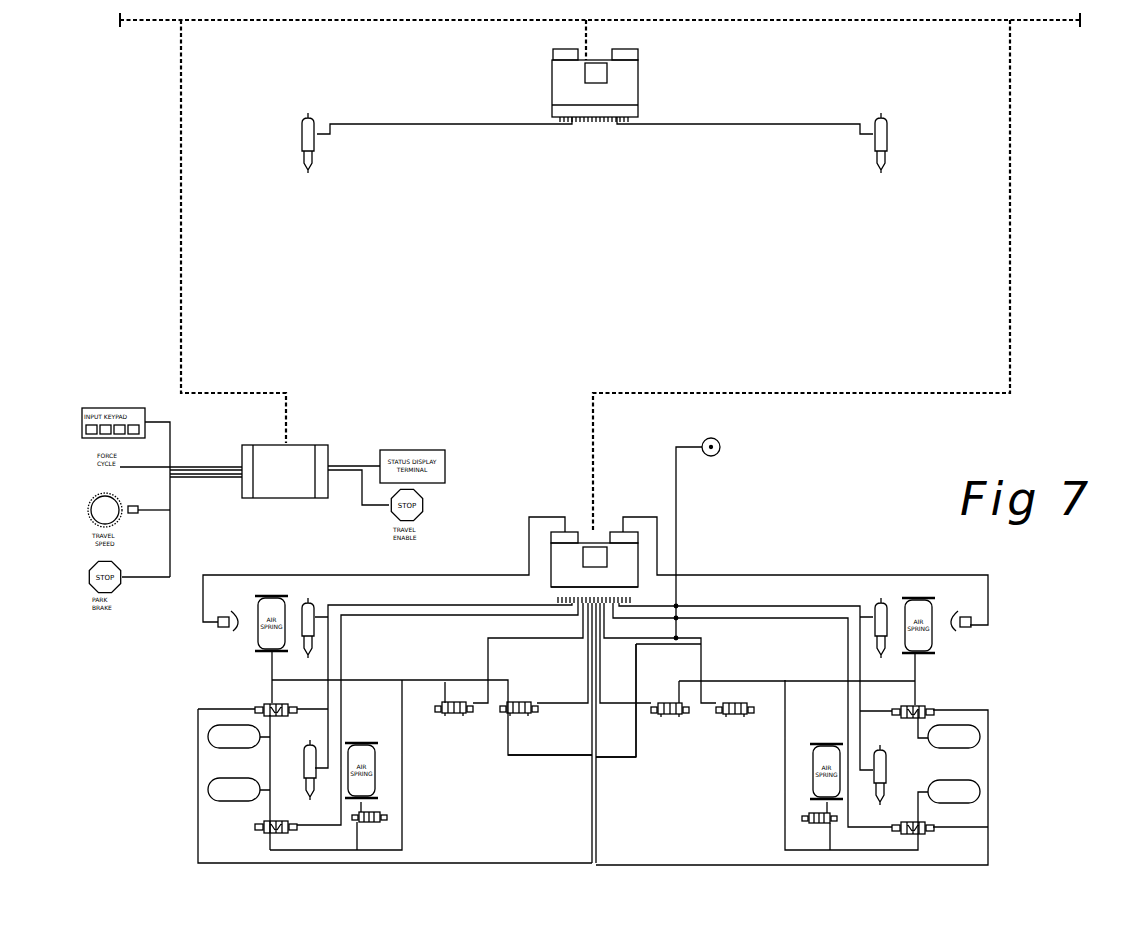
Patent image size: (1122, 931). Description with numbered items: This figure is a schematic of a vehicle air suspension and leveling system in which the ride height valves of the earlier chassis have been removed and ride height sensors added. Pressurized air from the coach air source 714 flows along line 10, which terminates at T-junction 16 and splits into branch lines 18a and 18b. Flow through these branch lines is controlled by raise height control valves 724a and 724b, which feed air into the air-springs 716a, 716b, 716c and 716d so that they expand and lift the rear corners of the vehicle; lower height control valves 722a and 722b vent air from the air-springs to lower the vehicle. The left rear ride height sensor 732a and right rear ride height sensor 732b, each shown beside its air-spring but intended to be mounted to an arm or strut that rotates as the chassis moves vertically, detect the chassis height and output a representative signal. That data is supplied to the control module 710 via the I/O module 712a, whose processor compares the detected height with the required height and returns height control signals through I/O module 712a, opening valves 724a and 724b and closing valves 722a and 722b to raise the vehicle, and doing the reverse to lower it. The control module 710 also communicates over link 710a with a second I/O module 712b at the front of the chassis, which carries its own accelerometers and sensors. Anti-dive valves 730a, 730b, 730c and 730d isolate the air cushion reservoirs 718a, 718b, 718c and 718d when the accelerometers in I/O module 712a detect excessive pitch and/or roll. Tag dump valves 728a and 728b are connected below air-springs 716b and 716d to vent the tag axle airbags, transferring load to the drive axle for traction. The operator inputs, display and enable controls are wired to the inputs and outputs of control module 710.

The line 10 is at (676, 490).
The T-junction 16 is at (638, 758).
The line 18a is at (537, 760).
The line 18b is at (677, 745).
The control module 710 is at (305, 449).
The communication bus 710a is at (288, 404).
The I/O module 712a is at (630, 560).
The I/O module and 2 axis accelerometer 712b is at (630, 80).
The coach air source 714 is at (720, 452).
The air-spring 716a is at (258, 636).
The air-spring 716b is at (365, 785).
The air-spring 716c is at (915, 597).
The air-spring 716d is at (823, 787).
The air cushion reservoir 718a is at (223, 738).
The air cushion reservoir 718b is at (223, 786).
The air cushion reservoir 718c is at (970, 735).
The air cushion reservoir 718d is at (967, 790).
The lower height control valve 722a is at (441, 702).
The lower height control valve 722b is at (745, 703).
The raise height control valve 724a is at (515, 716).
The raise height control valve 724b is at (665, 716).
The tag dump valve 728a is at (385, 816).
The tag dump valve 728b is at (803, 821).
The anti-dive valve 730a is at (257, 709).
The anti-dive valve 730b is at (260, 826).
The anti-dive valve 730c is at (917, 707).
The anti-dive valve 730d is at (927, 827).
The left rear ride height sensor 732a is at (223, 624).
The right rear ride height sensor 732b is at (972, 628).